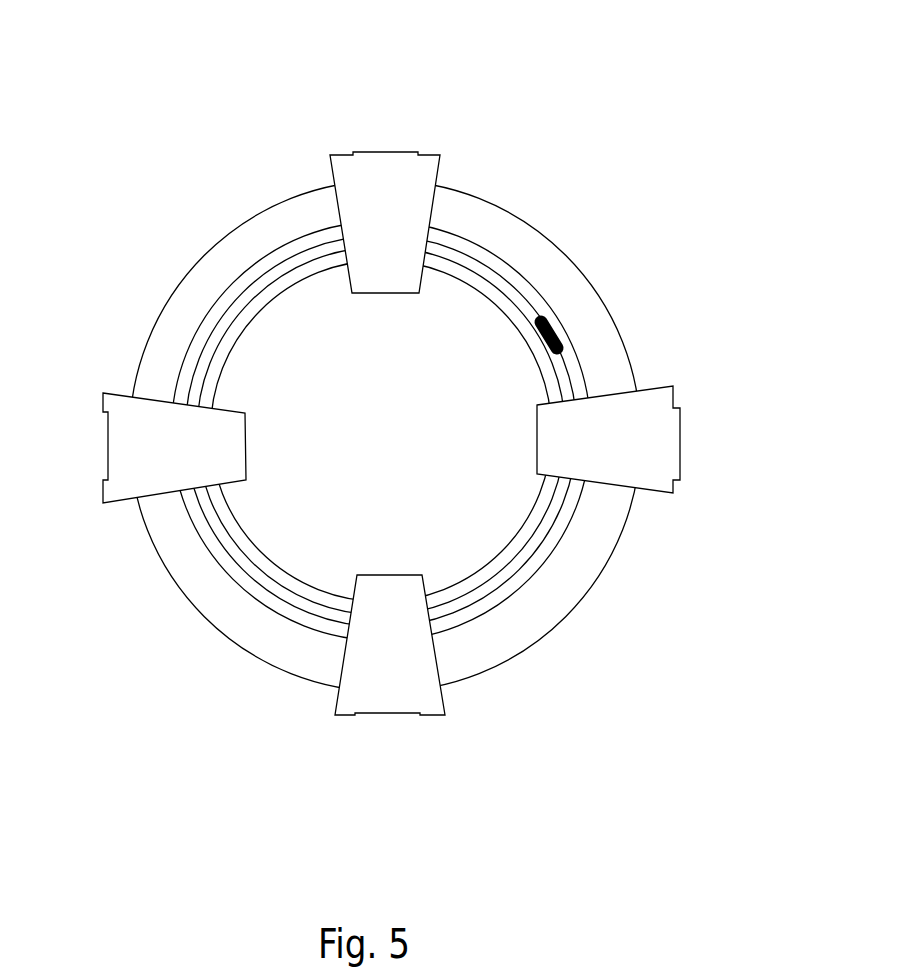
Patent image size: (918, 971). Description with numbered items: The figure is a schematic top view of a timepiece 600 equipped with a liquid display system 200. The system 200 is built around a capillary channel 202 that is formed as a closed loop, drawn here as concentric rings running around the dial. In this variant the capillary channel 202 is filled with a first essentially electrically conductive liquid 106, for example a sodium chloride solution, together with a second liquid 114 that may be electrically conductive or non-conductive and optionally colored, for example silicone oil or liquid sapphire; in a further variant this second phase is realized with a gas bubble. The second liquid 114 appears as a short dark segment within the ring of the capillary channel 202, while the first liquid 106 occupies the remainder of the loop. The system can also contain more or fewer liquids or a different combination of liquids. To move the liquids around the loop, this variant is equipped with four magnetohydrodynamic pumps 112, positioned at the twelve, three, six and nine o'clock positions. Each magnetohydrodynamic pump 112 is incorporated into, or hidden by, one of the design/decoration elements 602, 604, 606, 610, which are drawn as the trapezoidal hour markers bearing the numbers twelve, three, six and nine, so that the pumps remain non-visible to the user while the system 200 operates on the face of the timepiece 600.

The timepiece 600 is at (187, 188).
The design/decoration element 602 is at (340, 210).
The design/decoration element 604 is at (612, 389).
The design/decoration element 606 is at (340, 670).
The design/decoration element 610 is at (167, 400).
The magnetohydrodynamic pump 112 is at (445, 217).
The second liquid 114 is at (557, 330).
The first electrically conductive liquid 106 is at (540, 553).
The system 200 is at (242, 597).
The capillary channel 202 is at (300, 617).